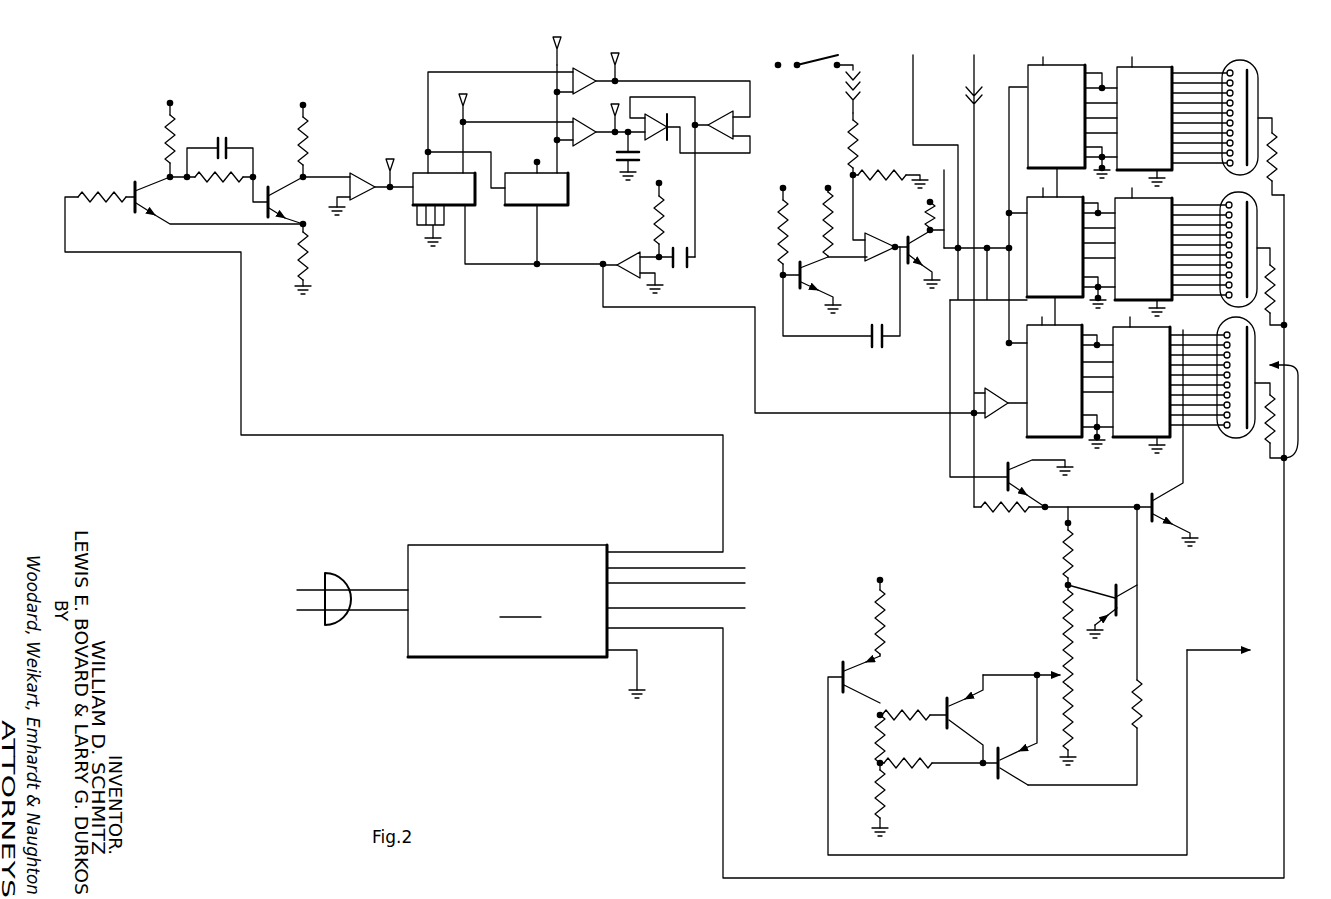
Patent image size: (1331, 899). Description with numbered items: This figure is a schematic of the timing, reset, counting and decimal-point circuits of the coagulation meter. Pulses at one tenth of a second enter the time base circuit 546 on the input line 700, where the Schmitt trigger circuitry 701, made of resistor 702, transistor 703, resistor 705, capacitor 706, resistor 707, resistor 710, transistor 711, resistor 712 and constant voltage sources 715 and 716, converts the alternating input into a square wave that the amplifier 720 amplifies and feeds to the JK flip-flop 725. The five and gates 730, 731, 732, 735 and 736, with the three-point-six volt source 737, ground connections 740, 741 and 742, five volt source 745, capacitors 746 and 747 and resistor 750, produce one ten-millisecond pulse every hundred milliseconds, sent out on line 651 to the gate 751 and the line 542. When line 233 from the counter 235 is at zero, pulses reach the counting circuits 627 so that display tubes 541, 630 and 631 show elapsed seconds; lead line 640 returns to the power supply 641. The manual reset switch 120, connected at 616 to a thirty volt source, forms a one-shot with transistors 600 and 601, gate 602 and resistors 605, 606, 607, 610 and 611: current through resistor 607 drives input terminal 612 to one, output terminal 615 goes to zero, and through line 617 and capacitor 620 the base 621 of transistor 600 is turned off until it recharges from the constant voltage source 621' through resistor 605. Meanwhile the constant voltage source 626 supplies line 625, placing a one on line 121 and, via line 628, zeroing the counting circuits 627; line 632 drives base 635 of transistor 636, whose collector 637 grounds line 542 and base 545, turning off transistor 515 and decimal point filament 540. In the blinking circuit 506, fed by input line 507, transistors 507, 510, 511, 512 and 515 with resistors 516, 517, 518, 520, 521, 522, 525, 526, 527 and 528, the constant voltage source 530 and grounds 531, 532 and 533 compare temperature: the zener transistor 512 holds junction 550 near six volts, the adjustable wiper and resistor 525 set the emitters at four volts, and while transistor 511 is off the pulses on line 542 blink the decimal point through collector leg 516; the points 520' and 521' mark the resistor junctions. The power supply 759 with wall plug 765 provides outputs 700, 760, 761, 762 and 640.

The input line 700 is at (65, 222).
The Schmitt trigger circuitry 701 is at (213, 128).
The resistor 702 is at (110, 190).
The transistor 703 is at (138, 218).
The resistor 705 is at (160, 135).
The capacitor 706 is at (225, 137).
The resistor 707 is at (222, 180).
The resistor 710 is at (306, 106).
The transistor 711 is at (279, 168).
The resistor 712 is at (308, 258).
The constant voltage source 715 is at (170, 100).
The constant voltage source 716 is at (303, 102).
The amplifier 720 is at (364, 166).
The JK flip-flop 725 is at (452, 252).
The and gate 730 is at (583, 66).
The and gate 731 is at (609, 121).
The and gate 732 is at (652, 136).
The and gate 735 is at (728, 107).
The and gate 736 is at (643, 254).
The 3.6 volt source 737 is at (537, 161).
The ground connection 740 is at (432, 242).
The ground connection 741 is at (745, 140).
The ground connection 742 is at (660, 288).
The 5 volt source 745 is at (659, 181).
The capacitor 746 is at (627, 174).
The capacitor 747 is at (697, 252).
The resistor 750 is at (663, 215).
The time base circuit 546 is at (419, 267).
The switch connection 616 is at (779, 63).
The manual reset switch 120 is at (815, 75).
The resistor 607 is at (848, 148).
The resistor 610 is at (856, 158).
The resistor 611 is at (944, 170).
The input terminal 612 is at (890, 205).
The constant voltage source 621' is at (783, 172).
The resistor 606 is at (820, 210).
The resistor 605 is at (778, 230).
The line 617 is at (865, 253).
The base 621 is at (788, 285).
The gate 602 is at (888, 255).
The transistor 600 is at (840, 281).
The transistor 601 is at (920, 234).
The constant voltage source 626 is at (927, 203).
The output terminal 615 is at (911, 264).
The capacitor 620 is at (865, 347).
The line 651 is at (757, 376).
The line 121 is at (915, 82).
The line 625 is at (957, 150).
The line 233 is at (975, 75).
The line 628 is at (993, 244).
The counting circuits 627 is at (1185, 55).
The display tube 631 is at (1262, 105).
The display tube 630 is at (1272, 232).
The decimal point filament 540 is at (1243, 318).
The gate 751 is at (1012, 372).
The line 632 is at (946, 416).
The counter 235 is at (1012, 427).
The base 635 is at (1005, 468).
The transistor 636 is at (1030, 462).
The power supply 641 is at (375, 660).
The collector 637 is at (1048, 502).
The line 542 is at (1049, 506).
The base 545 is at (1151, 498).
The collector leg 516 is at (882, 640).
The display tube 541 is at (1284, 462).
The constant voltage source 530 is at (1066, 524).
The transistor 512 is at (1105, 575).
The lead line 640 is at (672, 630).
The decimal point blinking circuit 506 is at (945, 598).
The resistor 527 is at (880, 578).
The transistor 507 is at (1200, 650).
The transistor 510 is at (948, 690).
The resistor 526 is at (1062, 565).
The junction 550 is at (1062, 595).
The ground connection 533 is at (1194, 542).
The transistor 515 is at (1172, 548).
The adjustable wiper and resistor 525 is at (1072, 665).
The resistor 528 is at (1141, 705).
The resistor 520 is at (912, 692).
The transistor 511 is at (1023, 745).
The junction 520' is at (854, 718).
The resistor 517 is at (884, 728).
The resistor 521 is at (939, 754).
The junction 521' is at (854, 773).
The resistor 522 is at (1071, 718).
The ground connection 532 is at (1073, 763).
The resistor 518 is at (890, 797).
The ground connection 531 is at (892, 832).
The wall plug 765 is at (340, 575).
The power supply 759 is at (526, 621).
The output 760 is at (745, 568).
The output 761 is at (745, 583).
The output 762 is at (745, 608).